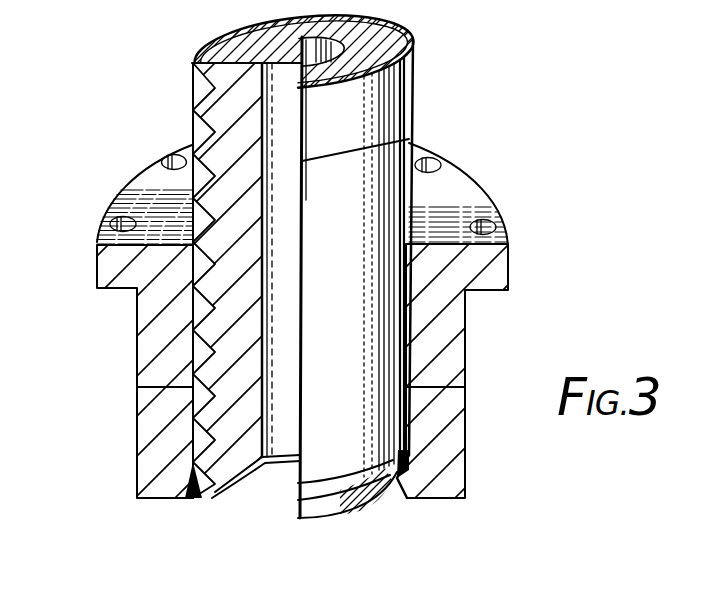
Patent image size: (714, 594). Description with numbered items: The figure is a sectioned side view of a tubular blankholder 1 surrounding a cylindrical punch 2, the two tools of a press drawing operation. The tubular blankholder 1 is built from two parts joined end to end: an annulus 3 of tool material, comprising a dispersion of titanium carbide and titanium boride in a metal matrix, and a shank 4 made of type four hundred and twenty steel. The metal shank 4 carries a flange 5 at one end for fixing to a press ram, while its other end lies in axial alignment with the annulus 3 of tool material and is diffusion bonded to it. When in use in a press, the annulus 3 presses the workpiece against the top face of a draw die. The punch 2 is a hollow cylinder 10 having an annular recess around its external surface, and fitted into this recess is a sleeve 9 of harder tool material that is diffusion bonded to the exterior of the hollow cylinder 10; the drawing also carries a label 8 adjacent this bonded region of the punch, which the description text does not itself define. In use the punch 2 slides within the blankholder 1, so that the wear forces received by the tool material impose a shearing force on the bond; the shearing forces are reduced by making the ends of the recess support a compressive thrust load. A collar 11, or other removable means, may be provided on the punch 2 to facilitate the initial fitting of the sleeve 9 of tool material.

The tubular blankholder 1 is at (286, 285).
The cylindrical punch 2 is at (420, 90).
The annulus of tool material 3 is at (143, 425).
The shank 4 is at (143, 313).
The flange 5 is at (97, 232).
The inner liner 8 is at (256, 216).
The sleeve 9 is at (197, 185).
The hollow cylinder 10 is at (262, 278).
The collar 11 is at (196, 100).